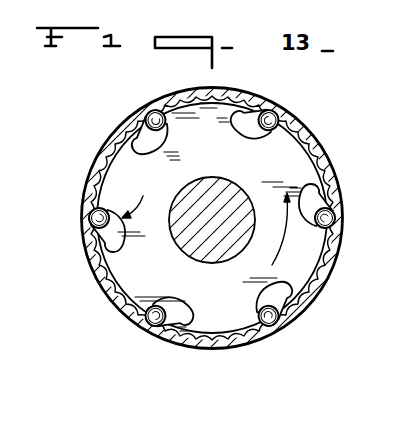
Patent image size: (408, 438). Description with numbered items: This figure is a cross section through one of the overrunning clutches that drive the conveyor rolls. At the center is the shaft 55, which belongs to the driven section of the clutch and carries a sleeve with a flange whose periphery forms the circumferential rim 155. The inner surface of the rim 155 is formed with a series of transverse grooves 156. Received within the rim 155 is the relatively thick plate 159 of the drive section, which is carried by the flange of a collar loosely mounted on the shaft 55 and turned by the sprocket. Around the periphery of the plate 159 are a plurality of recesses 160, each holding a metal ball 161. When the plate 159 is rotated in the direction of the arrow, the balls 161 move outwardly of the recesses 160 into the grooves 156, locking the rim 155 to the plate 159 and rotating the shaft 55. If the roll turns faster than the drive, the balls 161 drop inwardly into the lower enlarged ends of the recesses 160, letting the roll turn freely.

The shaft 55 is at (202, 261).
The rim 155 is at (243, 88).
The transverse grooves 156 is at (312, 165).
The plate 159 is at (138, 282).
The recesses 160 is at (163, 152).
The metal balls 161 is at (88, 214).